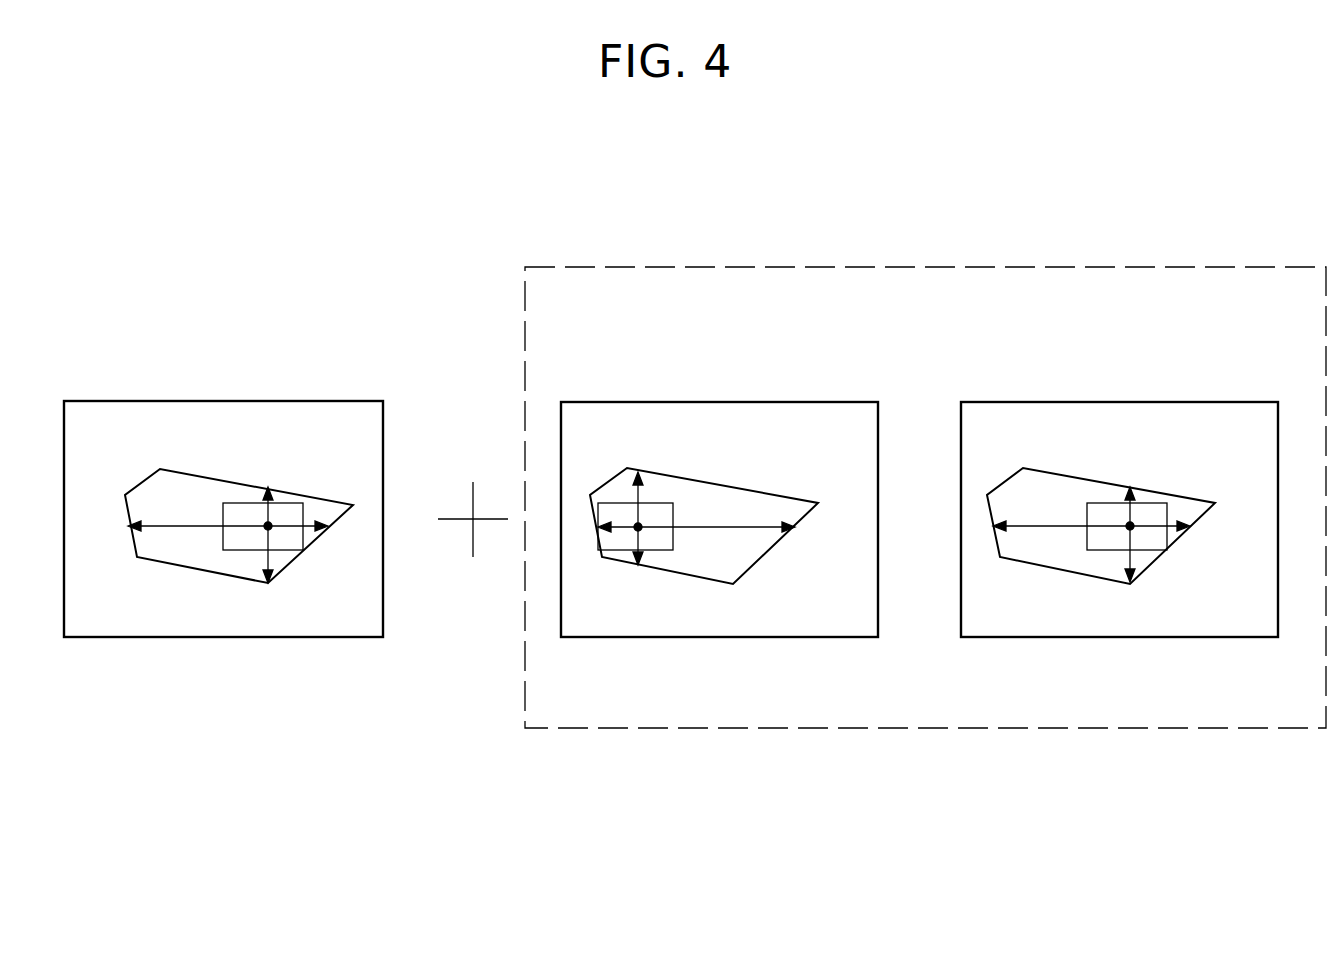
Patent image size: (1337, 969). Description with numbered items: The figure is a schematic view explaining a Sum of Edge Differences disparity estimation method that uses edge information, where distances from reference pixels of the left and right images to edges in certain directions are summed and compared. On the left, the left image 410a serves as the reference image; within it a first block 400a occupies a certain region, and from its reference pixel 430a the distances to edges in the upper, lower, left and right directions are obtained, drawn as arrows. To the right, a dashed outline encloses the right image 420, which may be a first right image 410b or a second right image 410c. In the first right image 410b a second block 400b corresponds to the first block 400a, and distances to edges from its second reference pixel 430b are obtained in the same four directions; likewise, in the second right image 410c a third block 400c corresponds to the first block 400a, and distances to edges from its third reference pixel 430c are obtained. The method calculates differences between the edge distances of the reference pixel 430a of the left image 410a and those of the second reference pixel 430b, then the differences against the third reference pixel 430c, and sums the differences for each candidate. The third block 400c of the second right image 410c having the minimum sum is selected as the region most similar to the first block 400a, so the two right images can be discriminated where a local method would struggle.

The first block 400a is at (234, 503).
The second block 400b is at (650, 503).
The third block 400c is at (1108, 503).
The left image 410a is at (300, 401).
The first right image 410b is at (812, 402).
The second right image 410c is at (1198, 402).
The right image 420 is at (947, 729).
The reference pixel 430a is at (272, 528).
The second reference pixel 430b is at (643, 529).
The third reference pixel 430c is at (1133, 528).